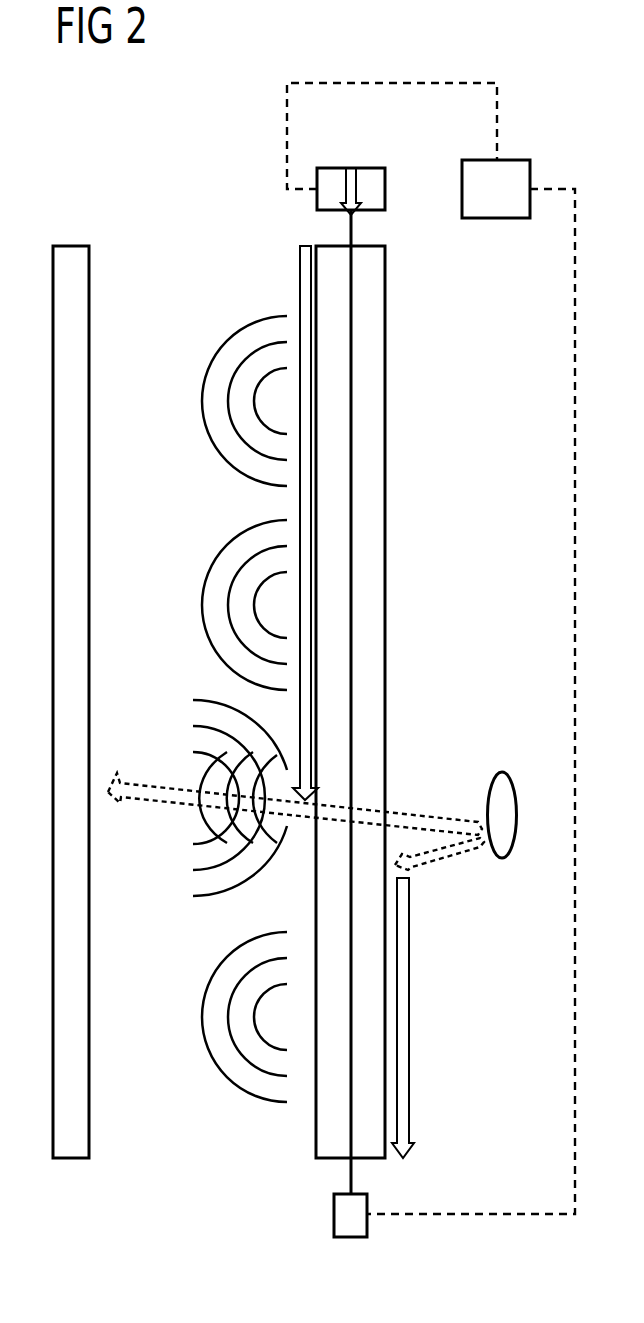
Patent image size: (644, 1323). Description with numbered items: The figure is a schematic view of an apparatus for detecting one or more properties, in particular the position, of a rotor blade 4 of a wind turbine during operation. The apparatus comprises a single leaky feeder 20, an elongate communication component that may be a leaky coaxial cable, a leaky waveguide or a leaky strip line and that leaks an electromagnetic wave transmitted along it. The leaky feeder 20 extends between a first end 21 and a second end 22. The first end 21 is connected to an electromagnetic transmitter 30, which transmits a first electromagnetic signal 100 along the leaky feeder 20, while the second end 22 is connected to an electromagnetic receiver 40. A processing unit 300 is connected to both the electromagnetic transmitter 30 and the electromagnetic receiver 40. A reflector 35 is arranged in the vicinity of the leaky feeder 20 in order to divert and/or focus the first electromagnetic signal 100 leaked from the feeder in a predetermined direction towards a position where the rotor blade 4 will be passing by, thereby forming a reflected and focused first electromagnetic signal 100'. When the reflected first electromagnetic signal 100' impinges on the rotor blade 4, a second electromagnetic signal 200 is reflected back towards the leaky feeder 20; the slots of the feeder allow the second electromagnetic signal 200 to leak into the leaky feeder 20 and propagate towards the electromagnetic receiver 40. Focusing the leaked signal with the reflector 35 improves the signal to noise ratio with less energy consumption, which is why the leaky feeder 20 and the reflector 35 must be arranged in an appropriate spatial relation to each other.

The rotor blade 4 is at (502, 771).
The leaky feeder 20 is at (355, 270).
The first end 21 is at (348, 233).
The second end 22 is at (353, 1176).
The electromagnetic transmitter 30 is at (331, 177).
The reflector 35 is at (70, 243).
The electromagnetic receiver 40 is at (334, 1215).
The first electromagnetic signal 100 is at (232, 707).
The reflected first electromagnetic signal 100' is at (217, 770).
The second electromagnetic signal 200 is at (444, 860).
The processing unit 300 is at (497, 218).